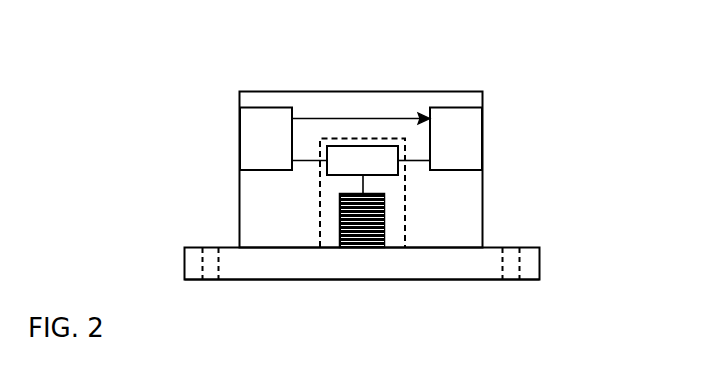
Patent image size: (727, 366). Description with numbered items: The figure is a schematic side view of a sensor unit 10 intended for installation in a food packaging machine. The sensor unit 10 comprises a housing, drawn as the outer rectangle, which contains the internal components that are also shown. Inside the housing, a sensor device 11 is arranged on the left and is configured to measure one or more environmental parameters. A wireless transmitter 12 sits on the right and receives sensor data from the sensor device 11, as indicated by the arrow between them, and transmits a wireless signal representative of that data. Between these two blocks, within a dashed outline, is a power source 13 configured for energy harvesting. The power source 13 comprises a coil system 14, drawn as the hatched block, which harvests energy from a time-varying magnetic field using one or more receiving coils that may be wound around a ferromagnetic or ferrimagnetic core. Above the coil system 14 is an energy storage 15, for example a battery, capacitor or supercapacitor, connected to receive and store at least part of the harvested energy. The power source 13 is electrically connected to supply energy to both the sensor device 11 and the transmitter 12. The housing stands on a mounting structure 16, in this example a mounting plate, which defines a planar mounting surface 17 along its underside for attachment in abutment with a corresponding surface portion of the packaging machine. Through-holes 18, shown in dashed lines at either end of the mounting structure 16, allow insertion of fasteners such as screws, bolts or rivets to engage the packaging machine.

The sensor unit 10 is at (238, 129).
The sensor device 11 is at (256, 150).
The wireless transmitter 12 is at (445, 150).
The power source 13 is at (347, 138).
The coil system 14 is at (385, 215).
The energy storage 15 is at (352, 168).
The mounting structure 16 is at (535, 247).
The mounting surface 17 is at (427, 280).
The through-holes 18 is at (218, 262).